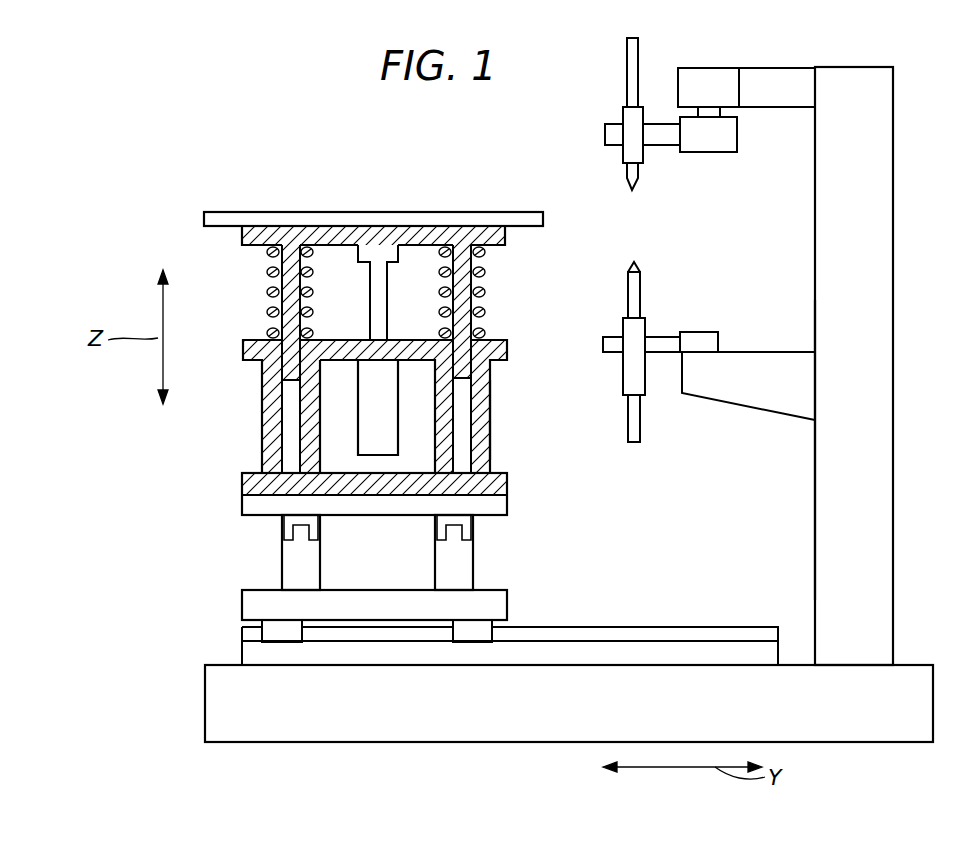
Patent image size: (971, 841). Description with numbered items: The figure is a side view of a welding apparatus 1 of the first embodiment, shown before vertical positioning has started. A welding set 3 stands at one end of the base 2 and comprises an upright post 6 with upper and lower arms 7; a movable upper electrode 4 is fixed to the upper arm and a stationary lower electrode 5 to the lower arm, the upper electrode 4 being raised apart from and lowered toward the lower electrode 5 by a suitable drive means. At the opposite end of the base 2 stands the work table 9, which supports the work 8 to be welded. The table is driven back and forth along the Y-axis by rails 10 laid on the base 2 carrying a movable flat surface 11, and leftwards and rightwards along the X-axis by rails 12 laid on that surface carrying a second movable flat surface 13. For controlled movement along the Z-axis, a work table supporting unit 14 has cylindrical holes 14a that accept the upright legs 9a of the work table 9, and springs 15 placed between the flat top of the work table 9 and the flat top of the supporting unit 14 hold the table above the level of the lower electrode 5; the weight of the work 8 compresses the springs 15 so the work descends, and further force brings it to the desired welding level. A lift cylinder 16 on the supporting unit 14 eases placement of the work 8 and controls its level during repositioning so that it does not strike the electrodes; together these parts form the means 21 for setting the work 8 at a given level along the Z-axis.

The welding apparatus 1 is at (413, 188).
The base 2 is at (912, 672).
The welding set 3 is at (898, 265).
The upper electrode 4 is at (637, 178).
The lower electrode 5 is at (637, 297).
The upright post 6 is at (880, 452).
The arms 7 is at (775, 98).
The work 8 is at (312, 218).
The work table 9 is at (403, 270).
The upright legs 9a is at (462, 322).
The rails 10 is at (697, 630).
The movable flat surface 11 is at (505, 600).
The rails 12 is at (463, 555).
The movable flat surface 13 is at (498, 505).
The work table supporting unit 14 is at (405, 406).
The cylindrical holes 14a is at (462, 448).
The springs 15 is at (485, 290).
The lift cylinder 16 is at (372, 397).
The means for setting a work at a given level 21 is at (224, 267).